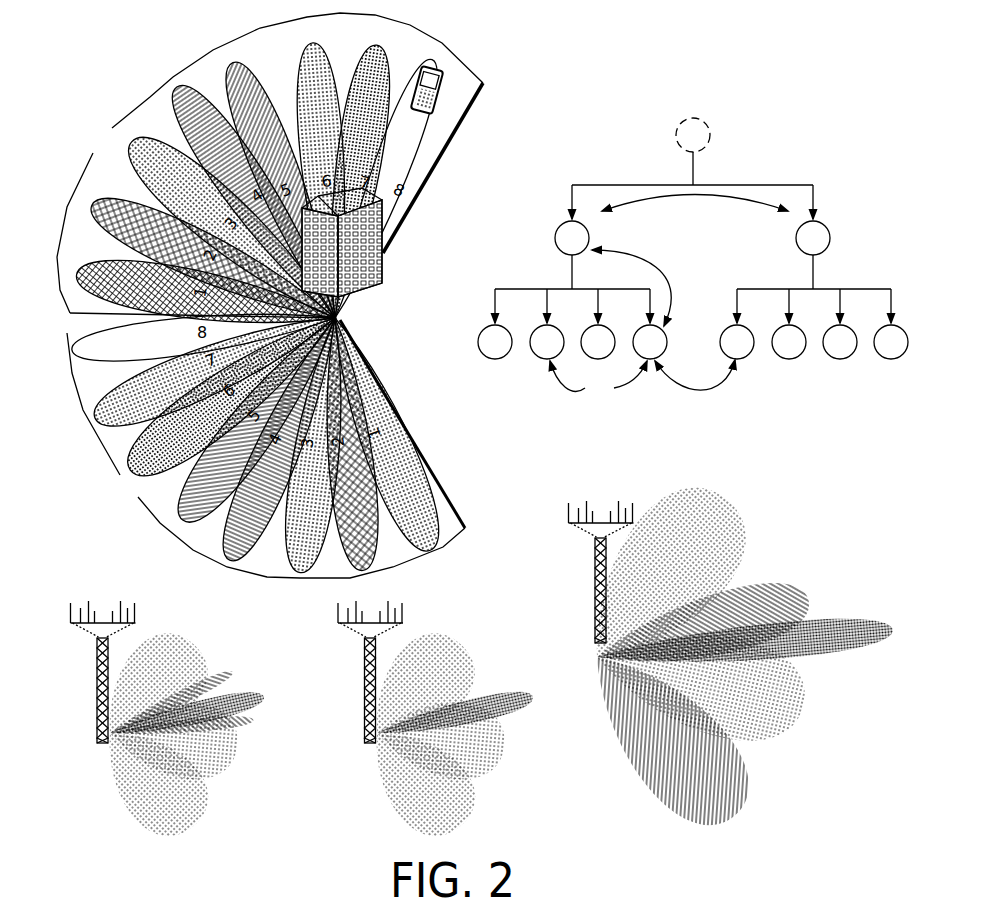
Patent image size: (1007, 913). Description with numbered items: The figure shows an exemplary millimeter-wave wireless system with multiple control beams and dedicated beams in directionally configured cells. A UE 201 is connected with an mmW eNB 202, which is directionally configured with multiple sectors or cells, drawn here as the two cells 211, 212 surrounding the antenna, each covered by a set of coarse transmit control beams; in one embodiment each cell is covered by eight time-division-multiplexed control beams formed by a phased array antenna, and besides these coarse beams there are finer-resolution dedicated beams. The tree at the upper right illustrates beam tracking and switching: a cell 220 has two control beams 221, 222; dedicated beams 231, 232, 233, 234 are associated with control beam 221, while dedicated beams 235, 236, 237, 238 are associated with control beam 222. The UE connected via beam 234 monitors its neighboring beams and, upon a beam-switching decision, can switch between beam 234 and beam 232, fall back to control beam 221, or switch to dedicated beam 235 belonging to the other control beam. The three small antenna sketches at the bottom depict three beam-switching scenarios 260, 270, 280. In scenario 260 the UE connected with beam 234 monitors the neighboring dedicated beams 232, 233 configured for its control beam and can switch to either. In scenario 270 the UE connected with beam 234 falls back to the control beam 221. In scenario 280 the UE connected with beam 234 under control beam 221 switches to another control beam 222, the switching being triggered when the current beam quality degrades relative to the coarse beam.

The UE 201 is at (420, 68).
The mmW eNB 202 is at (385, 268).
The cell 211 is at (269, 165).
The cell 212 is at (260, 449).
The cell 220 is at (710, 135).
The control beam 221 is at (555, 238).
The control beam 222 is at (830, 238).
The dedicated beam 231 is at (493, 360).
The dedicated beam 232 is at (545, 360).
The dedicated beam 233 is at (596, 360).
The dedicated beam 234 is at (648, 360).
The dedicated beam 235 is at (735, 360).
The dedicated beam 236 is at (787, 360).
The dedicated beam 237 is at (838, 360).
The dedicated beam 238 is at (889, 360).
The beam-switching scenario 260 is at (144, 822).
The beam-switching scenario 270 is at (411, 822).
The beam-switching scenario 280 is at (656, 822).